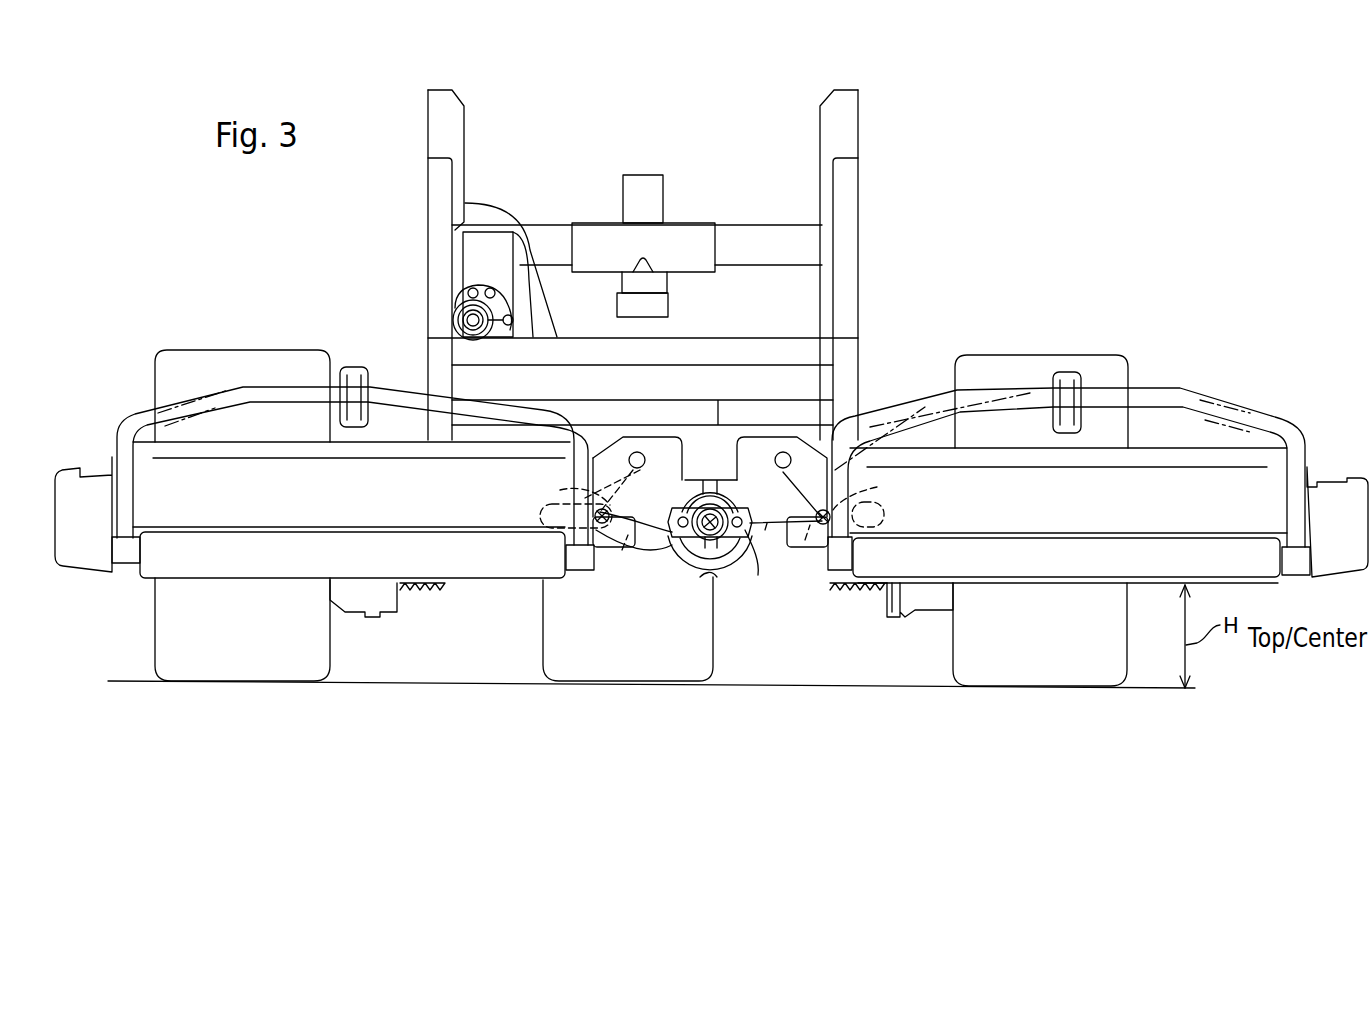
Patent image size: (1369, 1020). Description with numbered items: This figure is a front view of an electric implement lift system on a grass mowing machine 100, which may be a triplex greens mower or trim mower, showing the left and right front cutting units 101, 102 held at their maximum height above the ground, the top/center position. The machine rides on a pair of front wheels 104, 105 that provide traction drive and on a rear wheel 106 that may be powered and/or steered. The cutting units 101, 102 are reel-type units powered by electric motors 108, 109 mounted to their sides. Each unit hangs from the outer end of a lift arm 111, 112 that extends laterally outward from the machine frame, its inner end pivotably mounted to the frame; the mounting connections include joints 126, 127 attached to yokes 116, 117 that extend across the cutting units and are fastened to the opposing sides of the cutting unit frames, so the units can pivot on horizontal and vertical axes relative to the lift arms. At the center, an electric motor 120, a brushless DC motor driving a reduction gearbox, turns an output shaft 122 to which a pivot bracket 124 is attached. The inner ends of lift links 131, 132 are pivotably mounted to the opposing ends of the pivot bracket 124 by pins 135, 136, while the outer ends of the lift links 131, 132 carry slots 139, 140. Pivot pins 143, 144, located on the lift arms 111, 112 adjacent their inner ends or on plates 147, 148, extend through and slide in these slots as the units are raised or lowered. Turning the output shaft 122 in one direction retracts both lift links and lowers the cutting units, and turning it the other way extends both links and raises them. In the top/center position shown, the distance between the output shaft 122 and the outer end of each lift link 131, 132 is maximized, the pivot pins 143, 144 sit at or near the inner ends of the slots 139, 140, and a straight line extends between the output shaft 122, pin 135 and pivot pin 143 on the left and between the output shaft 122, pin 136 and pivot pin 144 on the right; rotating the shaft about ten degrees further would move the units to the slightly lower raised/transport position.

The grass mowing machine 100 is at (1063, 203).
The cutting unit 101 is at (1290, 388).
The cutting unit 102 is at (95, 410).
The front wheel 104 is at (1100, 355).
The front wheel 105 is at (180, 357).
The rear wheel 106 is at (543, 630).
The electric motor 108 is at (775, 435).
The electric motor 109 is at (648, 440).
The lift arm 111 is at (1002, 427).
The lift arm 112 is at (402, 427).
The yoke 116 is at (1198, 403).
The yoke 117 is at (222, 393).
The electric motor 120 is at (700, 577).
The output shaft 122 is at (700, 500).
The pivot bracket 124 is at (728, 480).
The joint 126 is at (1063, 367).
The joint 127 is at (348, 367).
The lift link 131 is at (765, 530).
The lift link 132 is at (652, 545).
The pin 135 is at (748, 535).
The pin 136 is at (667, 490).
The slot 139 is at (887, 505).
The slot 140 is at (540, 514).
The pivot pin 143 is at (805, 540).
The pivot pin 144 is at (622, 550).
The plate 147 is at (877, 487).
The plate 148 is at (578, 490).